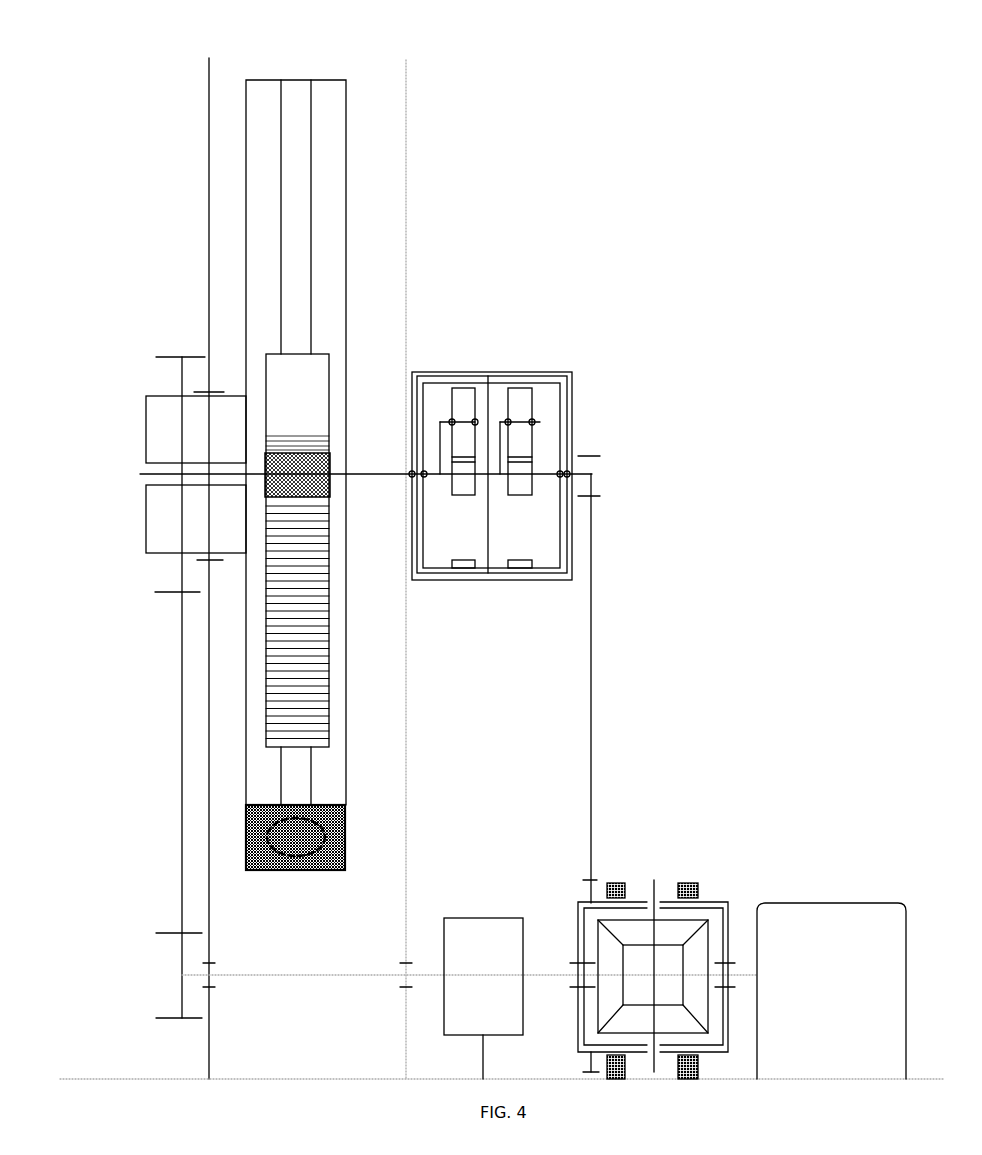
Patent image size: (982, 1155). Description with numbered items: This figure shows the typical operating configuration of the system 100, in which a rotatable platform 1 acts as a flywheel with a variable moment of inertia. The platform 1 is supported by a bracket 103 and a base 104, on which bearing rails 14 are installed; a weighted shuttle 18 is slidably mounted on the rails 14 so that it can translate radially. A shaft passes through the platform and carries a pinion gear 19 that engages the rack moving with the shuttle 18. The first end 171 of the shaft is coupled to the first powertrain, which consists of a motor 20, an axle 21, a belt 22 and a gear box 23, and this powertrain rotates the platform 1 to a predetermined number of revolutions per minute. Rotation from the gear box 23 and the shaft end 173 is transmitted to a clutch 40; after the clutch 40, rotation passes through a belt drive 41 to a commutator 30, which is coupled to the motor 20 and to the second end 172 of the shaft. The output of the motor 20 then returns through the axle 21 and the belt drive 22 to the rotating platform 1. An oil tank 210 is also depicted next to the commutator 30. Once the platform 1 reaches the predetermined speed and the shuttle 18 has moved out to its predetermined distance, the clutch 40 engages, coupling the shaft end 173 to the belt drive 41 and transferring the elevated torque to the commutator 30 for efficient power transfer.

The rotatable platform 1 is at (330, 195).
The bearing rails 14 is at (297, 117).
The weighted shuttle 18 is at (288, 840).
The pinion gear 19 is at (265, 442).
The motor 20 is at (800, 920).
The axle 21 is at (315, 970).
The belt 22 is at (178, 757).
The gear box 23 is at (178, 505).
The commutator 30 is at (632, 917).
The clutch 40 is at (433, 367).
The belt drive 41 is at (602, 627).
The drilling device 100 is at (230, 140).
The bracket 103 is at (192, 210).
The base 104 is at (160, 1080).
The first end of shaft 171 is at (140, 475).
The second end of shaft 172 is at (380, 475).
The shaft end 173 is at (592, 472).
The oil tank 210 is at (476, 945).